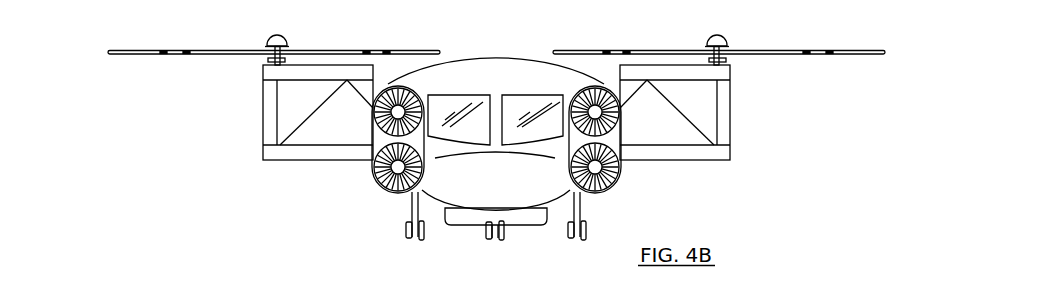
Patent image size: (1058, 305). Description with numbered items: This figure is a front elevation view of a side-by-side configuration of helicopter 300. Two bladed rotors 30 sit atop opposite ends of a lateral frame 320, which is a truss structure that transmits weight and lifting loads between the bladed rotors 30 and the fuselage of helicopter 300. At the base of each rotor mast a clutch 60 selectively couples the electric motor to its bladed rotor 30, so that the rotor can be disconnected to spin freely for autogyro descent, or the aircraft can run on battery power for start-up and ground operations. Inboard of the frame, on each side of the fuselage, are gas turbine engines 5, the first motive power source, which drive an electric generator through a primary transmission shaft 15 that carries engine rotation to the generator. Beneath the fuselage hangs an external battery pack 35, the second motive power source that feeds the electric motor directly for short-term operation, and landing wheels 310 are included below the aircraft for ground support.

The bladed rotor 30 is at (265, 38).
The clutch 60 is at (268, 60).
The helicopter 300 is at (488, 68).
The primary transmission shaft 15 is at (418, 98).
The gas turbine engine 5 is at (375, 118).
The lateral frame 320 is at (531, 141).
The external battery pack 35 is at (465, 218).
The landing wheels 310 is at (572, 243).